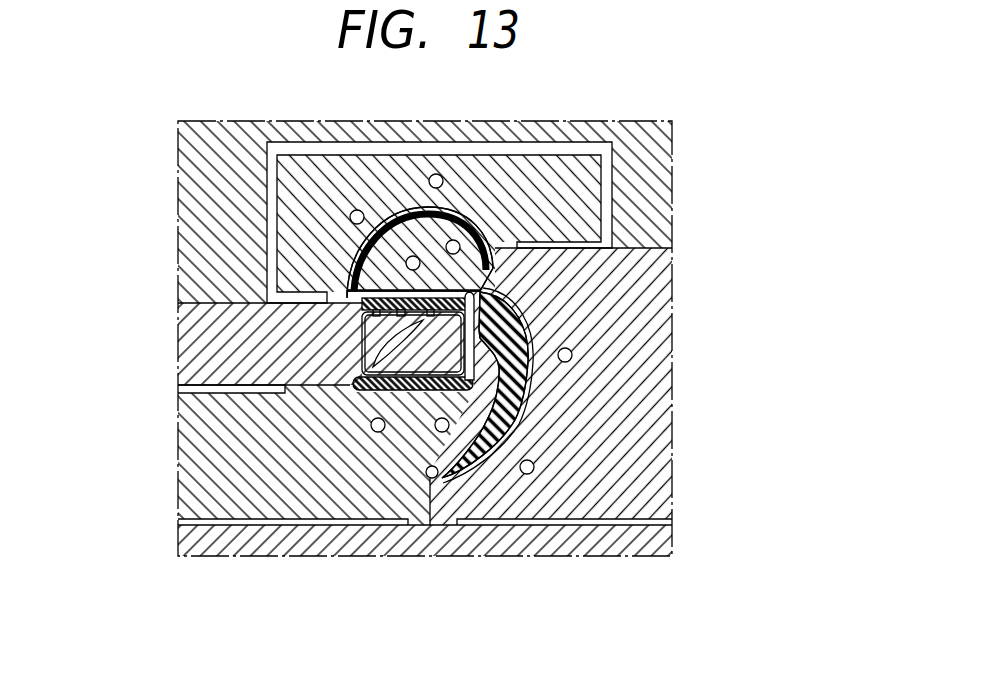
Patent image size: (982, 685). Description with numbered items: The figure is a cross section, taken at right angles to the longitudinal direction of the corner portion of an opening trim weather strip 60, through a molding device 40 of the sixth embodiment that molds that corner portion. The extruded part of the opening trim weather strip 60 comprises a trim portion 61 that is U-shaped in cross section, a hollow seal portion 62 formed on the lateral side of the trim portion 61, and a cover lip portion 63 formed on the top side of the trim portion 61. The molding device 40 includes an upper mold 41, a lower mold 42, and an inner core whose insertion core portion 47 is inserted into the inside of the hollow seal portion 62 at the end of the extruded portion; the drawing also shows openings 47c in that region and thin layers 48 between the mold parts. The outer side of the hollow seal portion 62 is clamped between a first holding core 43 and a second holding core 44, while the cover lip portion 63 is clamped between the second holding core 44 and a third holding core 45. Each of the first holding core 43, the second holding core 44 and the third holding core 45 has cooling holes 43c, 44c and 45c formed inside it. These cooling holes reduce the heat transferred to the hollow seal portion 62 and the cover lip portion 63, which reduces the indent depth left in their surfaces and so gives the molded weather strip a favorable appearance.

The molding device 40 is at (184, 111).
The upper mold 41 is at (203, 178).
The lower mold 42 is at (196, 526).
The first holding core 43 is at (565, 190).
The cooling holes 43c is at (360, 210).
The second holding core 44 is at (633, 337).
The cooling holes 44c is at (572, 355).
The third holding core 45 is at (203, 450).
The cooling holes 45c is at (439, 433).
The insertion core portion 47 is at (496, 264).
The contact holes 47c is at (420, 263).
The barrier layer 48 is at (330, 126).
The opening trim weather strip 60 is at (358, 345).
The trim portion 61 is at (363, 318).
The hollow seal portion 62 is at (358, 248).
The cover lip portion 63 is at (528, 380).